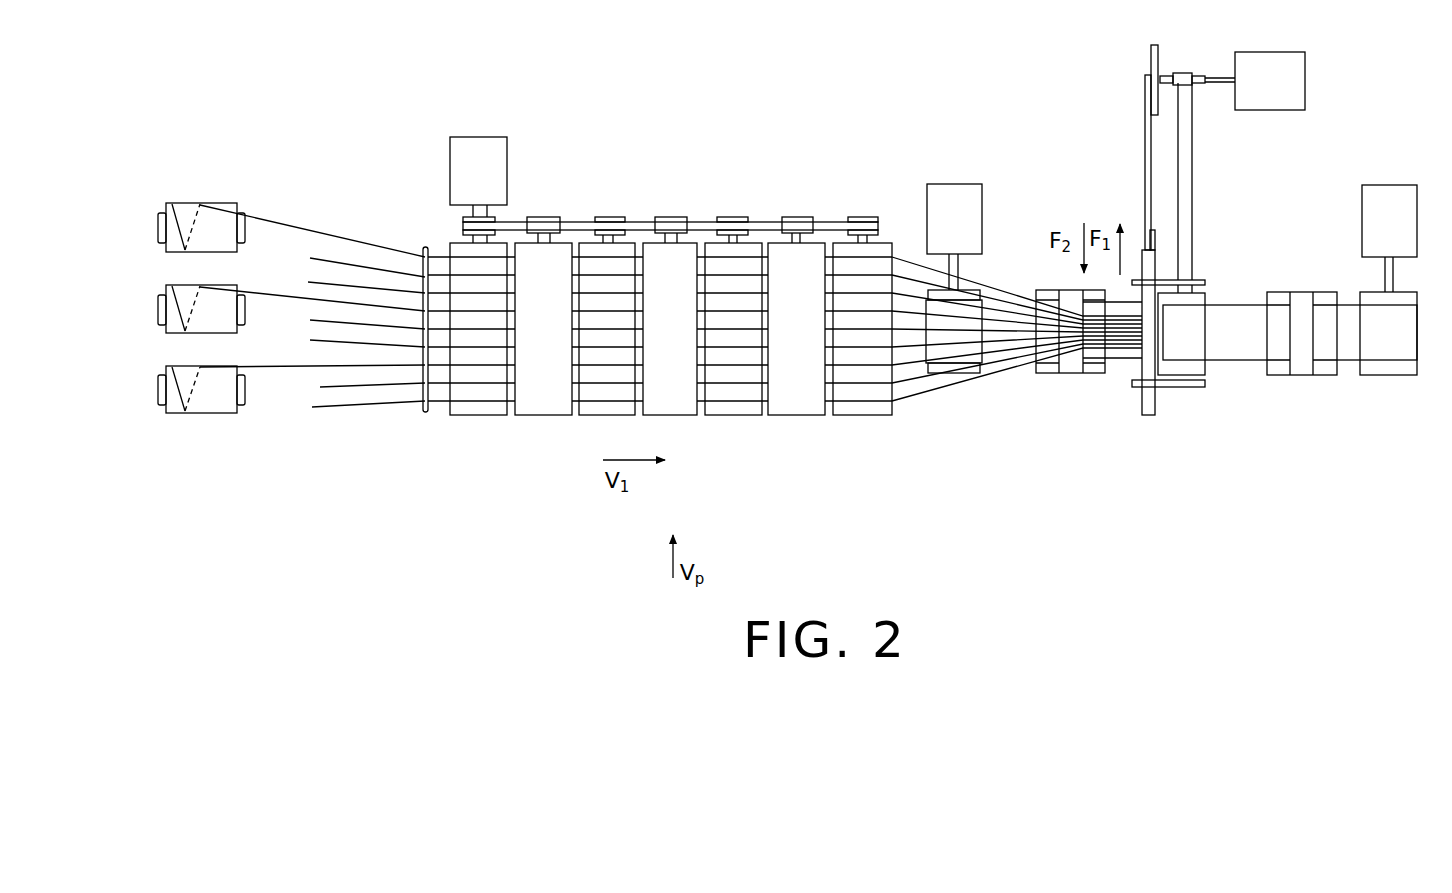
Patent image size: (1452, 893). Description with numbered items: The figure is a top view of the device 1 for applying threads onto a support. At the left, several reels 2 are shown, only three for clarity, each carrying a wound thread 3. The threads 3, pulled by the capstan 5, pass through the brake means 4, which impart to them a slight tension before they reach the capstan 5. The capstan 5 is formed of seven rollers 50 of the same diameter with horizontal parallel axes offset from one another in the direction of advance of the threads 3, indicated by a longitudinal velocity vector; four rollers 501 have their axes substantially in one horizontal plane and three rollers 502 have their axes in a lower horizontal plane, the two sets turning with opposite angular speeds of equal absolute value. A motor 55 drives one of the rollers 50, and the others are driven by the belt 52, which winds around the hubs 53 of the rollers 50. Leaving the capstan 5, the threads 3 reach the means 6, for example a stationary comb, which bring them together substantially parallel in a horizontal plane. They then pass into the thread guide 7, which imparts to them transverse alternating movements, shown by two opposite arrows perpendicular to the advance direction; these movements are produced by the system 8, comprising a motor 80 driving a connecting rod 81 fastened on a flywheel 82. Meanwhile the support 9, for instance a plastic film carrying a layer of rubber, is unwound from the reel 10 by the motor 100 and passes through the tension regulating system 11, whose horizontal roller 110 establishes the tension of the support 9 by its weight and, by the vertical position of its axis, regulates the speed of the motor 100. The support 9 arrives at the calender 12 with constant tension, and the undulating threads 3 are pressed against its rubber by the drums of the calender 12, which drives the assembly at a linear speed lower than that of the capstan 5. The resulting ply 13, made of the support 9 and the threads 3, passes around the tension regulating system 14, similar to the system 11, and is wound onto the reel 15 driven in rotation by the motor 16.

The device 1 is at (904, 146).
The reel 2 is at (185, 203).
The thread 3 is at (308, 282).
The brake means 4 is at (425, 413).
The capstan 5 is at (665, 325).
The means for bringing the threads together 6 is at (1086, 360).
The thread guide 7 is at (1138, 380).
The system 8 is at (1199, 197).
The support 9 is at (1347, 375).
The reel 10 is at (1400, 375).
The tension regulating system 11 is at (1297, 375).
The calender 12 is at (1205, 293).
The ply 13 is at (1012, 362).
The tension regulating system 14 is at (1063, 375).
The reel 15 is at (958, 373).
The motor 16 is at (982, 225).
The roller 50 is at (483, 415).
The roller 501 is at (455, 415).
The roller 502 is at (563, 415).
The belt 52 is at (832, 222).
The hub 53 is at (552, 217).
The motor 55 is at (507, 153).
The motor 80 is at (1273, 46).
The connecting rod 81 is at (1145, 170).
The flywheel 82 is at (1158, 65).
The motor 100 is at (1362, 220).
The horizontal roller 110 is at (1300, 326).